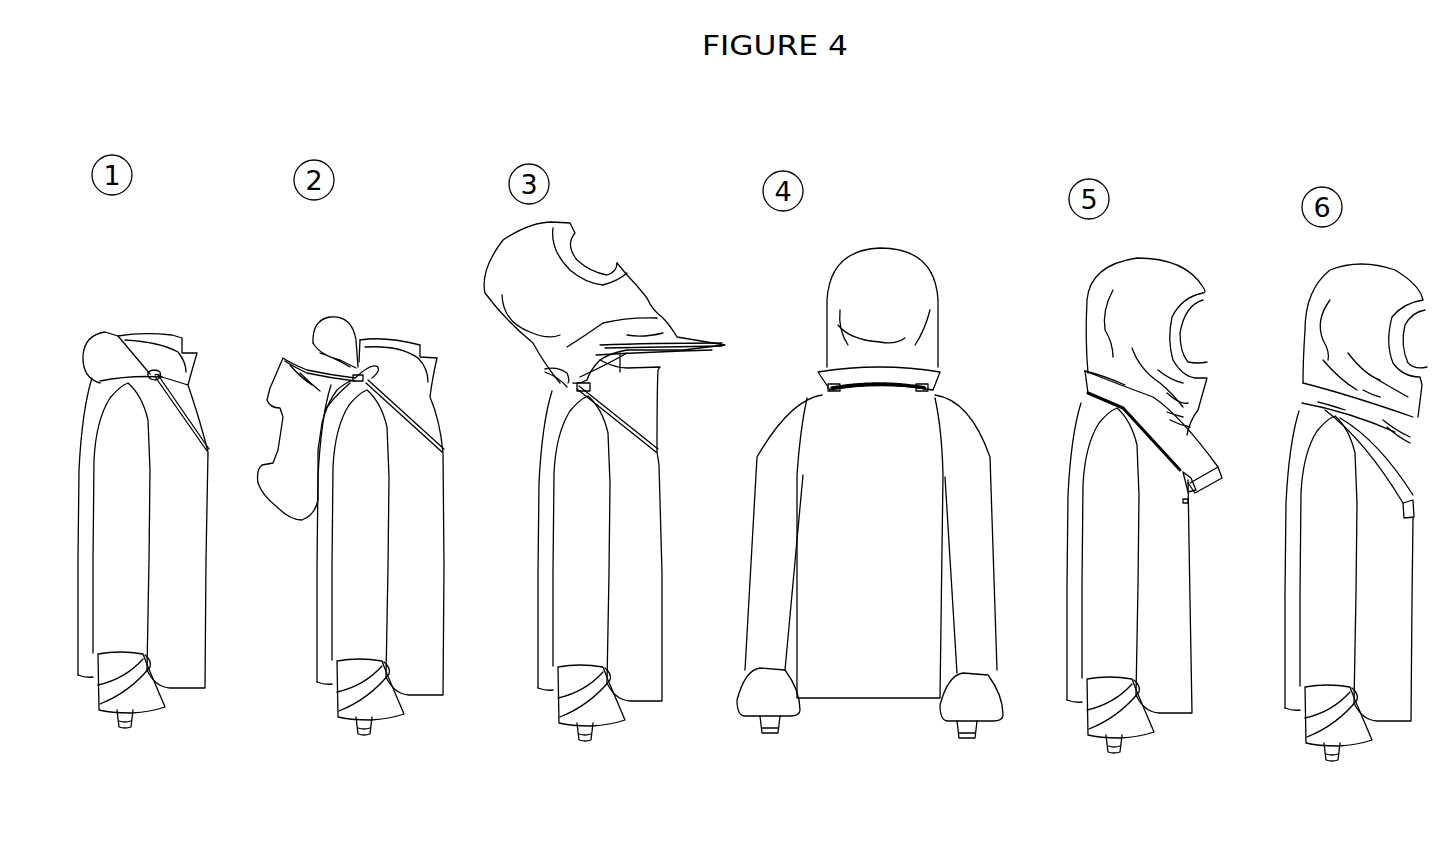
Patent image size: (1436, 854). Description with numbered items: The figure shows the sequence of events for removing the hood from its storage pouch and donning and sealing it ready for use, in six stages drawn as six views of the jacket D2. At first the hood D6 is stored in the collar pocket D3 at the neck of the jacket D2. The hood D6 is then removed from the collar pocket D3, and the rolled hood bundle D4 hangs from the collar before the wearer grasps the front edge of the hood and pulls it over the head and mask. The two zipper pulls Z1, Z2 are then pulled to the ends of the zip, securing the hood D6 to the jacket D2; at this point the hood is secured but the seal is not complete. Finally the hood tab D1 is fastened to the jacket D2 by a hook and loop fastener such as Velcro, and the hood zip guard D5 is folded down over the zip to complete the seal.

The hood tab D1 is at (1236, 462).
The jacket D2 is at (1188, 503).
The collar pocket D3 is at (103, 333).
The rolled hood bundle D4 is at (332, 317).
The hood zip guard D5 is at (1088, 376).
The hood D6 is at (272, 380).
The zipper pull Z1 is at (925, 388).
The zipper pull Z2 is at (830, 386).